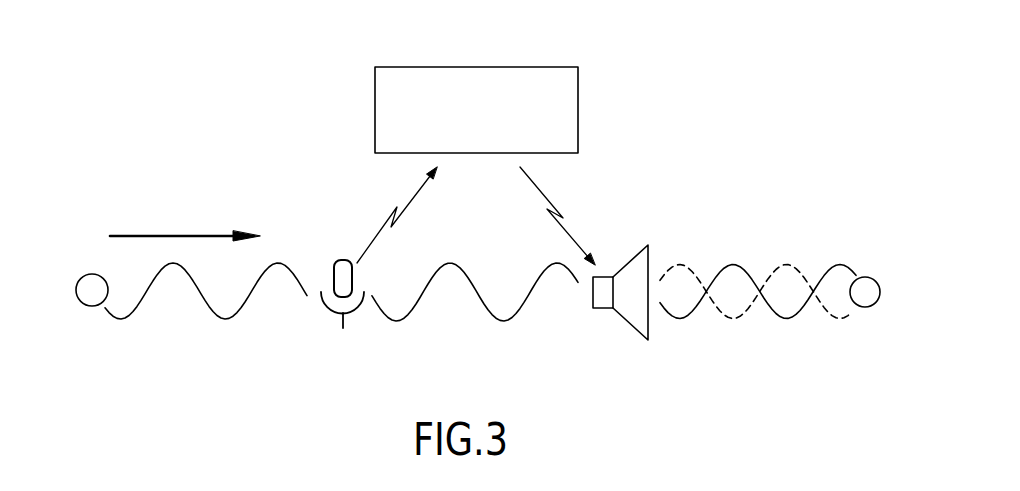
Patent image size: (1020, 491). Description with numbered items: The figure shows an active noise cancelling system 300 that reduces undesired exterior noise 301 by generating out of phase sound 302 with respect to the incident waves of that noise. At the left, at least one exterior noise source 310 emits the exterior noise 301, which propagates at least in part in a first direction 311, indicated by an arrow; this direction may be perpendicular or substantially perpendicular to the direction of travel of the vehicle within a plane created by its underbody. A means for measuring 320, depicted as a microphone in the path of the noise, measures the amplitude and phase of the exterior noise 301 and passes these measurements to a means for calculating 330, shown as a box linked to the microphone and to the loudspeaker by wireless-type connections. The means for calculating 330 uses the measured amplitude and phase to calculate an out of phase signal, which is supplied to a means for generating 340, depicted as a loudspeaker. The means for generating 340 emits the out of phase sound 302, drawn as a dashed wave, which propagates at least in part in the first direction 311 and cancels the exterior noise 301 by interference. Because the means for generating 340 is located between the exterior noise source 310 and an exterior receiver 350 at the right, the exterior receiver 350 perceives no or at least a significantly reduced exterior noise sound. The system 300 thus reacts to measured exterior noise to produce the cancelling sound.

The active noise cancelling system 300 is at (833, 50).
The exterior noise 301 is at (200, 297).
The out of phase sound 302 is at (732, 320).
The exterior noise source 310 is at (83, 293).
The first direction 311 is at (170, 232).
The means for measuring 320 is at (328, 300).
The means for calculating 330 is at (500, 127).
The means for generating 340 is at (613, 313).
The exterior receiver 350 is at (867, 293).